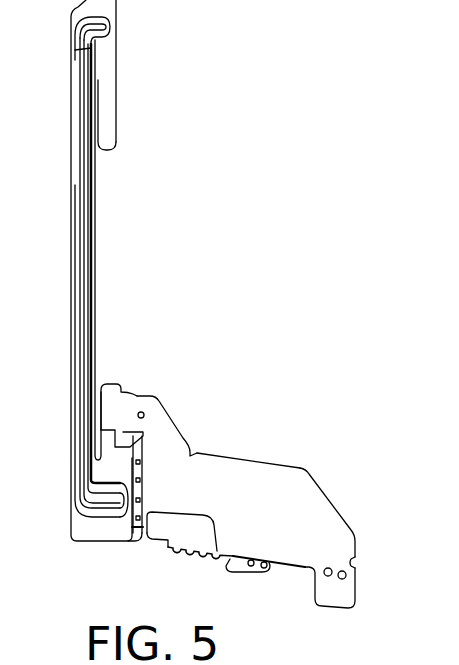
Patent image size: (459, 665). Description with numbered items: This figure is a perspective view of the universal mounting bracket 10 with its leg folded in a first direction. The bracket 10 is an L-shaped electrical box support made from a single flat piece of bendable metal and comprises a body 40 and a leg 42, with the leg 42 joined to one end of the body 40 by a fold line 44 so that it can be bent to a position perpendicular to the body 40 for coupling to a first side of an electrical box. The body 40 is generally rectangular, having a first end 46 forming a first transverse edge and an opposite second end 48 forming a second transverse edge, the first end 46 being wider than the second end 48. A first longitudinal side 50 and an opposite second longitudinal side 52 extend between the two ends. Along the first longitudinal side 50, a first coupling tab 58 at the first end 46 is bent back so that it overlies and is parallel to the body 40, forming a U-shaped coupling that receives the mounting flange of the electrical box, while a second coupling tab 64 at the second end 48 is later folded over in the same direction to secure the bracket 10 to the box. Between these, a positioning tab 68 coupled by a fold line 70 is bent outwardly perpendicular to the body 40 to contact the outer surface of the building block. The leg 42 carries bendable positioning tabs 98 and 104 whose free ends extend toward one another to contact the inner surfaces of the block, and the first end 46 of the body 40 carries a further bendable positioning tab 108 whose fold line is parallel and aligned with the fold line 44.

The universal mounting bracket 10 is at (179, 305).
The leg 42 is at (71, 326).
The bendable positioning tab 104 is at (117, 95).
The bendable positioning tab 98 is at (100, 387).
The bendable positioning tab 108 is at (122, 413).
The fold line 44 is at (138, 480).
The first end 46 is at (138, 541).
The second longitudinal side 52 is at (247, 462).
The body 40 is at (277, 502).
The second end 48 is at (360, 560).
The second coupling tab 64 is at (336, 606).
The first longitudinal side 50 is at (293, 568).
The positioning tab 68 is at (243, 567).
The fold line 70 is at (265, 566).
The first coupling tab 58 is at (185, 532).